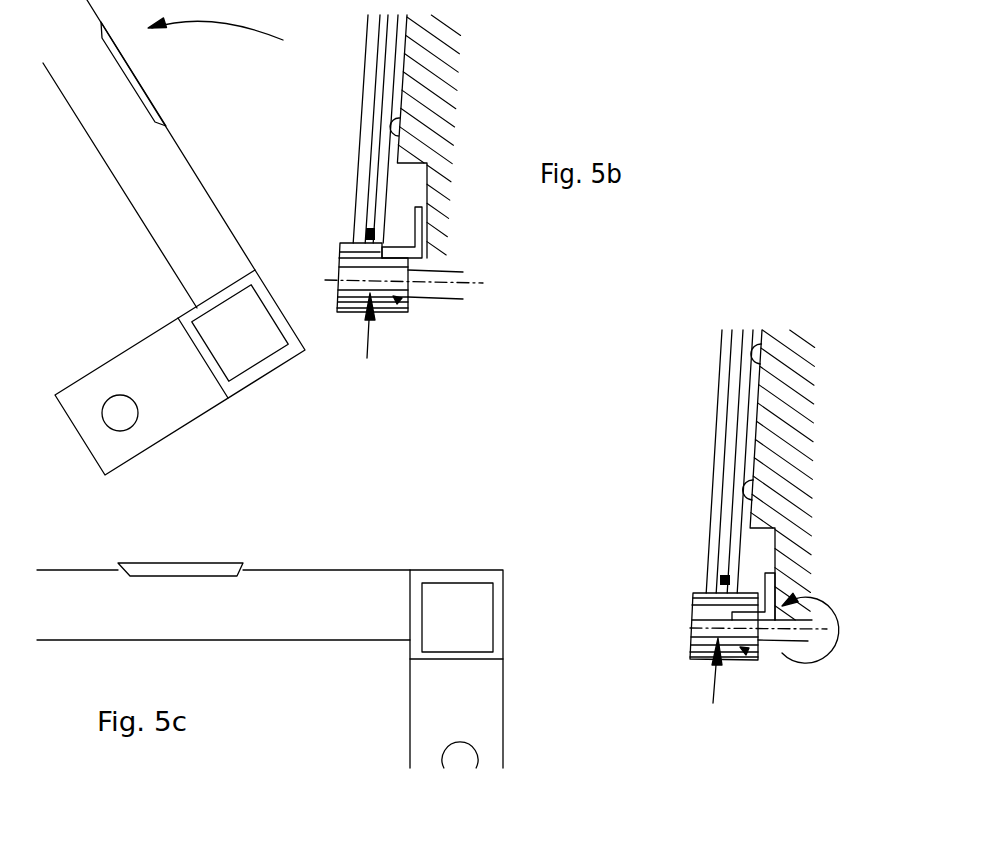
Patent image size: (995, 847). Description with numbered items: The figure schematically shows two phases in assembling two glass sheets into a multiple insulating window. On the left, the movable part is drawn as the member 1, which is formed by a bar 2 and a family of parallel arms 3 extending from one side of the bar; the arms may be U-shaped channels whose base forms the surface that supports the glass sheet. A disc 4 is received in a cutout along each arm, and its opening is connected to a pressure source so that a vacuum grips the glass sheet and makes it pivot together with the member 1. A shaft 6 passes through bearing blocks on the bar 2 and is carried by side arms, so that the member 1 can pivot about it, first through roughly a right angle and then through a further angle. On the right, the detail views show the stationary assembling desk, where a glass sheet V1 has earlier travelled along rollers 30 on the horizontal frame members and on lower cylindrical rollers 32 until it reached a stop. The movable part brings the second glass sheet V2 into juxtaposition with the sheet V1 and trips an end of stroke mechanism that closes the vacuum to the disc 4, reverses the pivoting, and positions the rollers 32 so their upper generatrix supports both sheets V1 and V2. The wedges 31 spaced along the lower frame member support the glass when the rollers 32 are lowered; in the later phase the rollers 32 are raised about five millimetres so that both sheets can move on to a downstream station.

In FIG. 5B, the member 1 is at (303, 172).
In FIG. 5C, the member 1 is at (342, 603).
In FIG. 5B, the bar 2 is at (250, 325).
In FIG. 5B, the arms 3 is at (188, 236).
In FIG. 5B, the disc 4 is at (156, 101).
In FIG. 5B, the shaft 6 is at (113, 407).
In FIG. 5C, the shaft 6 is at (468, 753).
In FIG. 5B, the glass sheet V1 is at (387, 88).
In FIG. 5C, the glass sheet V1 is at (745, 460).
In FIG. 5B, the glass sheet V2 is at (375, 53).
In FIG. 5C, the glass sheet V2 is at (720, 408).
In FIG. 5B, the rollers 30 is at (399, 124).
In FIG. 5B, the wedges 31 is at (427, 242).
In FIG. 5C, the wedges 31 is at (778, 585).
In FIG. 5B, the rollers 32 is at (410, 302).
In FIG. 5C, the rollers 32 is at (752, 663).